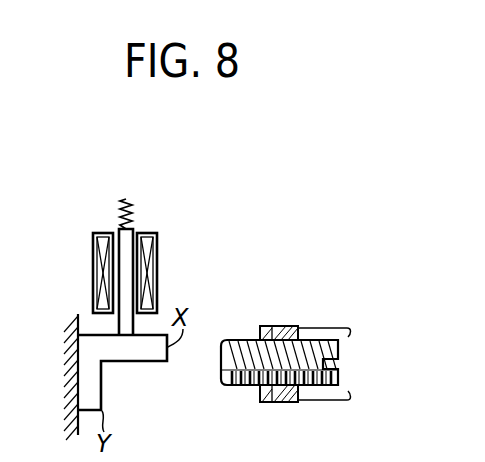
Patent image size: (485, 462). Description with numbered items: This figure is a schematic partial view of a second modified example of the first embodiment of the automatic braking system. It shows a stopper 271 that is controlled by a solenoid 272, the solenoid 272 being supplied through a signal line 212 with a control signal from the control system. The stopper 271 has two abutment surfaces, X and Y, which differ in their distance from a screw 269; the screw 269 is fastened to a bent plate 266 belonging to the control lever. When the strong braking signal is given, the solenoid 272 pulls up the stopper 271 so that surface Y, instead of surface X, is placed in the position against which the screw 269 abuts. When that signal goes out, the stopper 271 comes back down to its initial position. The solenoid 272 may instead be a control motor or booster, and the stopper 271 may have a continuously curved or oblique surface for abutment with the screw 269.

The signal line 212 is at (179, 237).
The solenoid 272 is at (94, 267).
The stopper 271 is at (137, 362).
The screw 269 is at (240, 390).
The bent plate 266 is at (332, 403).